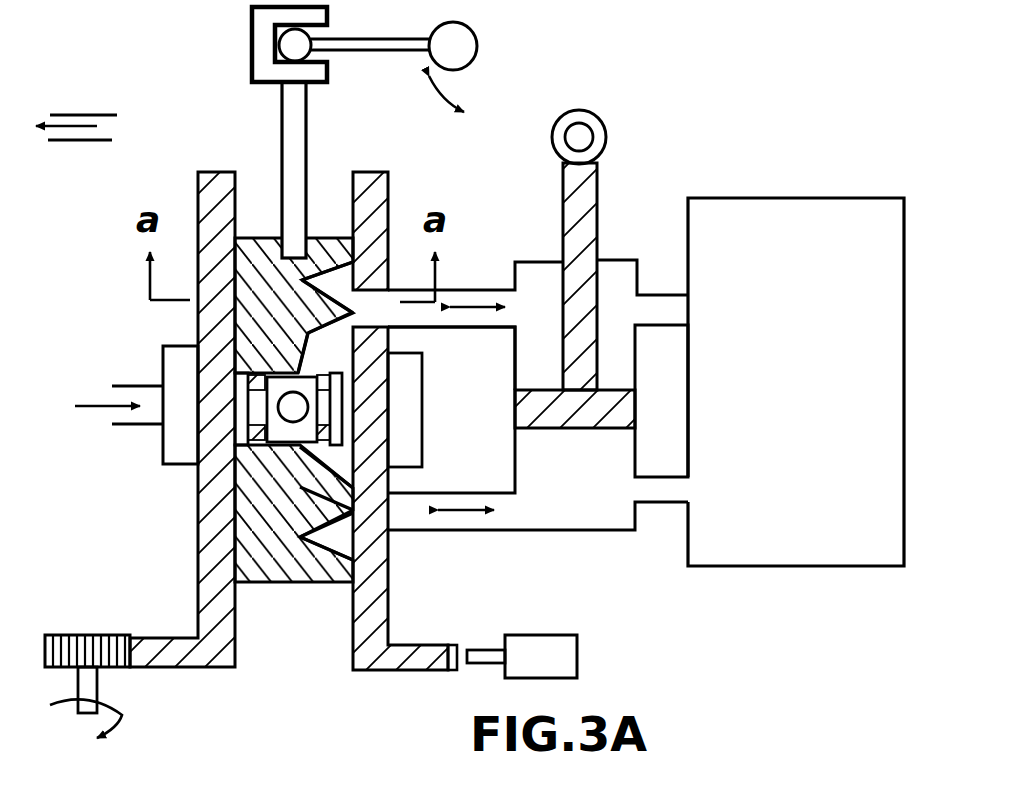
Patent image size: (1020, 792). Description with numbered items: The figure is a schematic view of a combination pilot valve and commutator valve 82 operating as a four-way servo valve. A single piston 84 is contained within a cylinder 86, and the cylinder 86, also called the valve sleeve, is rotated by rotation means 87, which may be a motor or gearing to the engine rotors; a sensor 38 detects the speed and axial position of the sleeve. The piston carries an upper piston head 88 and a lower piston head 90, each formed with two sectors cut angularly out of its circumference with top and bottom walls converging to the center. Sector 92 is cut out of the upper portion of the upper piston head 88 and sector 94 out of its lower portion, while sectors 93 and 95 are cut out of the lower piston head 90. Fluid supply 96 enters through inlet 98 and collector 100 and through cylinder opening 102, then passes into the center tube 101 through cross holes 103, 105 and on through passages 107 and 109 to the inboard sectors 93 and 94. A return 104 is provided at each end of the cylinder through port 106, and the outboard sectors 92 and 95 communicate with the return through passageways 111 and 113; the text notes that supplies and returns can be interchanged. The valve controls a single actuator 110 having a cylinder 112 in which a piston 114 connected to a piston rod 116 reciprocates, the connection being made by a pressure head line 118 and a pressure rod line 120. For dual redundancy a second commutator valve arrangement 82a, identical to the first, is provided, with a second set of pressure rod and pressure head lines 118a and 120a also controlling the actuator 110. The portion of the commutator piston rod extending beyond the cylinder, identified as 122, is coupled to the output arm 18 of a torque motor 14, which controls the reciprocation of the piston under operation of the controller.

The torque motor 14 is at (477, 33).
The output arm 18 is at (360, 40).
The sensor 38 is at (522, 656).
The combination pilot valve and commutator valve 82 is at (213, 80).
The second commutator valve arrangement 82a is at (810, 197).
The piston 84 is at (335, 240).
The cylinder 86 is at (382, 622).
The rotation means 87 is at (84, 634).
The upper piston head 88 is at (250, 308).
The lower piston head 90 is at (256, 537).
The sector 92 is at (330, 287).
The sector 93 is at (340, 473).
The sector 94 is at (395, 343).
The sector 95 is at (356, 546).
The fluid supply 96 is at (83, 408).
The inlet 98 is at (143, 428).
The collector 100 is at (178, 468).
The center tube 101 is at (340, 393).
The cylinder opening 102 is at (200, 404).
The cross hole 103 is at (340, 420).
The return 104 is at (258, 178).
The cross hole 105 is at (292, 410).
The port 106 is at (76, 112).
The passage 107 is at (340, 366).
The passage 109 is at (340, 442).
The actuator 110 is at (575, 535).
The passageway 111 is at (350, 262).
The cylinder 112 is at (518, 455).
The passageway 113 is at (332, 592).
The piston 114 is at (605, 445).
The piston rod 116 is at (598, 182).
The pressure head line 118 is at (470, 493).
The pressure rod line 118a is at (652, 292).
The pressure rod line 120 is at (471, 290).
The pressure head line 120a is at (660, 504).
The piston rod portion 122 is at (306, 118).